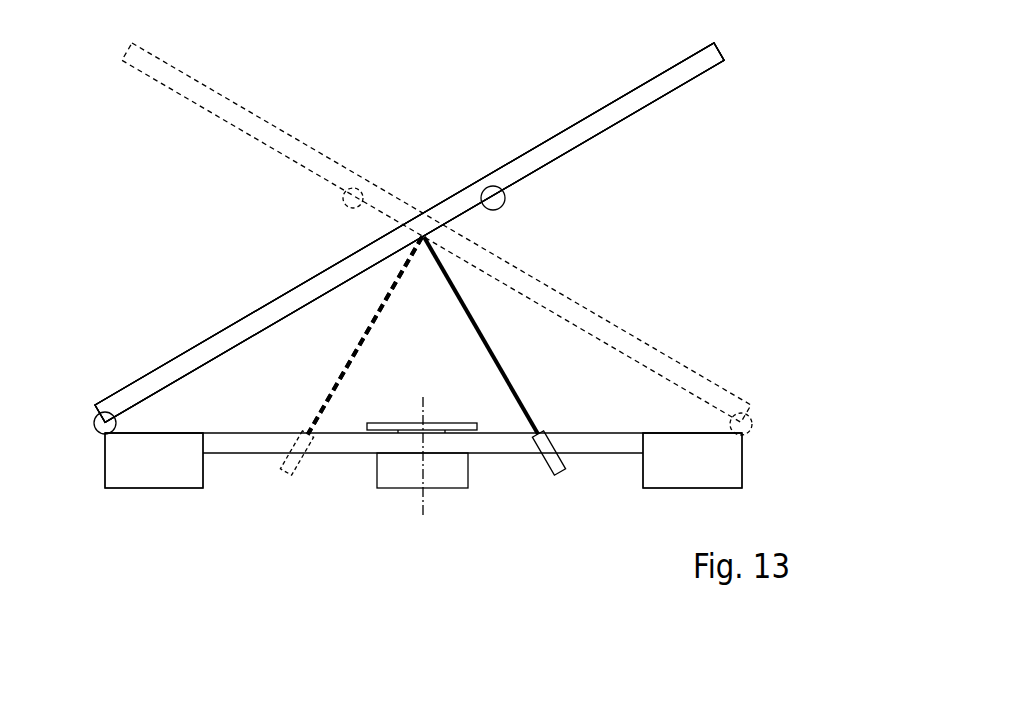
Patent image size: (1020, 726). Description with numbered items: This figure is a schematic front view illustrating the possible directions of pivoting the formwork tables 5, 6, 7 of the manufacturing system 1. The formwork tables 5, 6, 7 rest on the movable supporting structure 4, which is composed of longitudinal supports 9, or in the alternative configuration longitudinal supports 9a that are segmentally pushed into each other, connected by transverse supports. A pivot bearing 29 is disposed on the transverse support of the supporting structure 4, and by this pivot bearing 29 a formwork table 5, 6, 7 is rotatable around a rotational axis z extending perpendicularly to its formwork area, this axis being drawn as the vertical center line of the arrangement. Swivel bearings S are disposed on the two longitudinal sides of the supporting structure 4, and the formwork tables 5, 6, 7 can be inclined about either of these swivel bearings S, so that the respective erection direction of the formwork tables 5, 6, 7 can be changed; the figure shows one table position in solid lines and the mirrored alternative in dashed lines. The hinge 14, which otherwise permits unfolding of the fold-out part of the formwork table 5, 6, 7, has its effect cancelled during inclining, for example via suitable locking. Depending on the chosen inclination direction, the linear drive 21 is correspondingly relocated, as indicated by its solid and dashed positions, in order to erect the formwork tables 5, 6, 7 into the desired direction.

The manufacturing system 1 is at (345, 110).
The formwork table 5 is at (385, 163).
The formwork table 6 is at (409, 232).
The formwork table 7 is at (409, 232).
The hinge 14 is at (348, 202).
The linear drive 21 is at (447, 298).
The movable supporting structure 4 is at (262, 495).
The pivot bearing 29 is at (365, 459).
The longitudinal support 9 is at (185, 478).
The longitudinal support 9a is at (423, 460).
The swivel bearing S is at (100, 428).
The rotational axis z is at (422, 455).